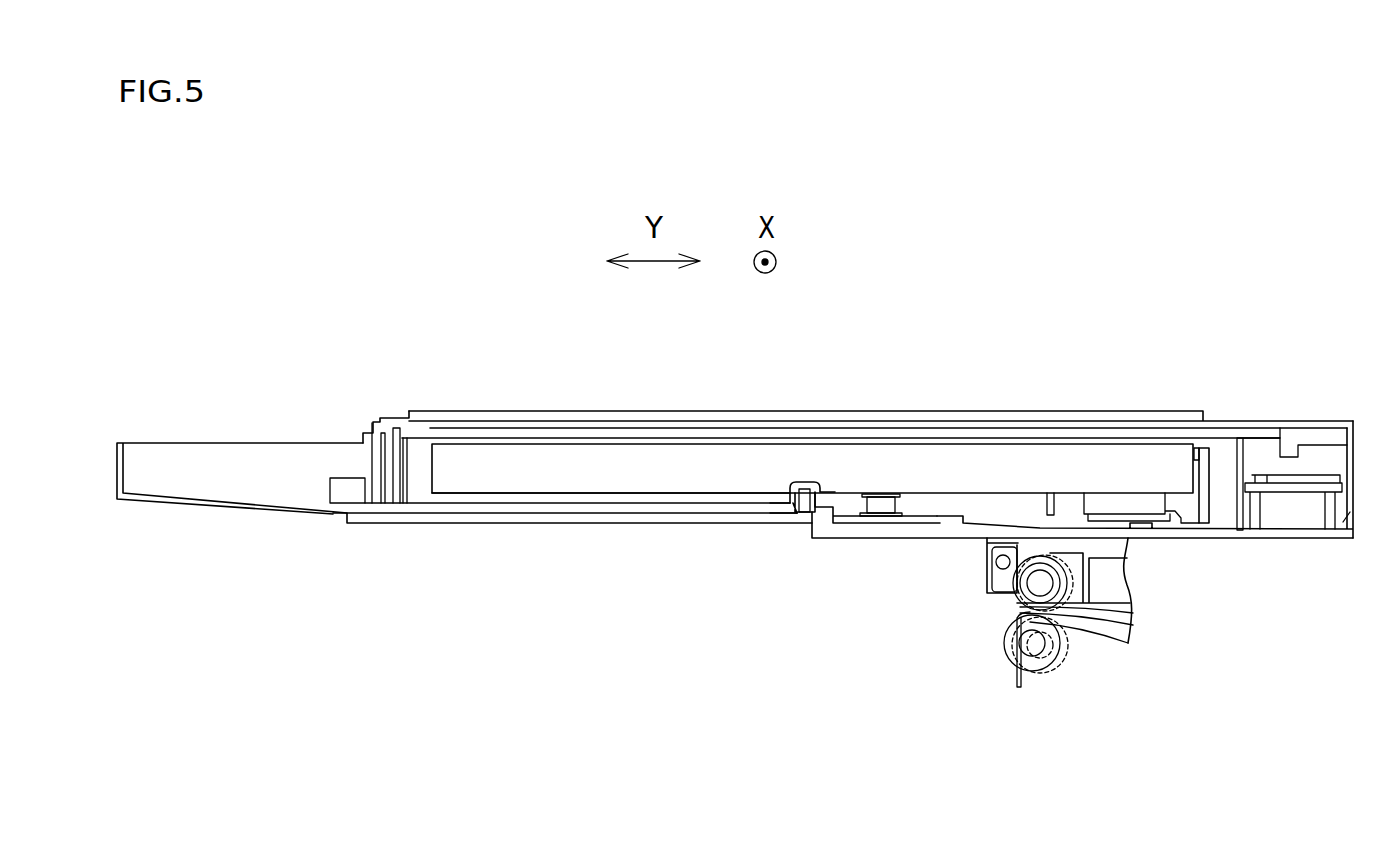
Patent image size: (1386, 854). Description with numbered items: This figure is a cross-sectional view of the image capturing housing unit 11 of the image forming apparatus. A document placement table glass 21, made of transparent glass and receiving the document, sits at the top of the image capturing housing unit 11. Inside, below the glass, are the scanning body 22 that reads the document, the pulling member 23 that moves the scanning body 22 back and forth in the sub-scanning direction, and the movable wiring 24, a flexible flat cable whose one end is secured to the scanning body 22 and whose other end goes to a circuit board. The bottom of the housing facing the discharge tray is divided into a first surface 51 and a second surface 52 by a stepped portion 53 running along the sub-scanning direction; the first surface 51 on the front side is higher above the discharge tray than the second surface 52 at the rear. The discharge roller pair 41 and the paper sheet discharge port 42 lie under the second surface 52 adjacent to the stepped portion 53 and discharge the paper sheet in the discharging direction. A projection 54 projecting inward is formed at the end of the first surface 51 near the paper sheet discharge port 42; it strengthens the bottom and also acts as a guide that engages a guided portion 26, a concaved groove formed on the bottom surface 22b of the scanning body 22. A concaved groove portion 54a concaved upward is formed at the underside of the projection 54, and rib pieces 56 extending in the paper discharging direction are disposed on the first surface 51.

The image capturing housing unit 11 is at (180, 245).
The document placement table glass 21 is at (880, 411).
The scanning body 22 is at (937, 465).
The bottom surface of the scanning body 22b is at (652, 494).
The pulling member 23 is at (882, 507).
The movable wiring 24 is at (1205, 485).
The guided portion 26 is at (792, 512).
The discharge roller pair 41 is at (1040, 570).
The paper sheet discharge port 42 is at (1003, 613).
The first surface 51 is at (566, 524).
The second surface 52 is at (1180, 541).
The stepped portion 53 is at (822, 532).
The projection 54 is at (807, 482).
The concaved groove portion 54a is at (803, 512).
The rib pieces 56 is at (460, 524).